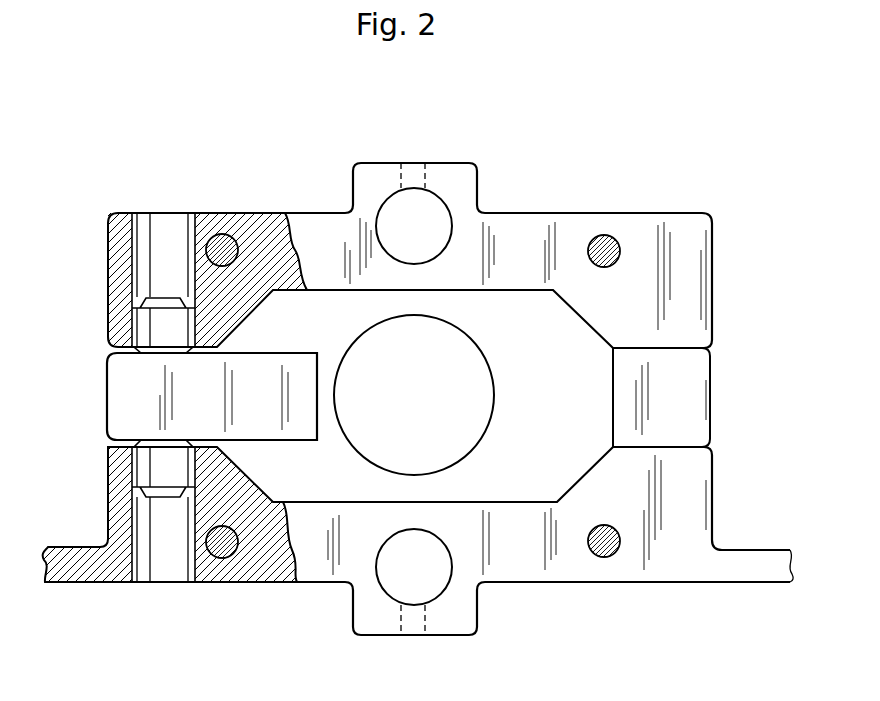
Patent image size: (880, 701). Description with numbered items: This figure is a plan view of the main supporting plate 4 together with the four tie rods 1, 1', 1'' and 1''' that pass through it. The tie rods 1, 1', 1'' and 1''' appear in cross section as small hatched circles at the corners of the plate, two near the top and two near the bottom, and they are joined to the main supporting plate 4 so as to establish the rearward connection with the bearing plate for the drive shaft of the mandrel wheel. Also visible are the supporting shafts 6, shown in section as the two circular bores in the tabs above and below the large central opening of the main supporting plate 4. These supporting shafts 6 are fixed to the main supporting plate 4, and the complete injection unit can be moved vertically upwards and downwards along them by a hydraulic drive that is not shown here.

The tie rod 1 is at (222, 588).
The tie rod 1' is at (222, 216).
The tie rod 1'' is at (606, 217).
The tie rod 1''' is at (605, 592).
The main supporting plate 4 is at (692, 252).
The supporting shaft 6 is at (432, 217).